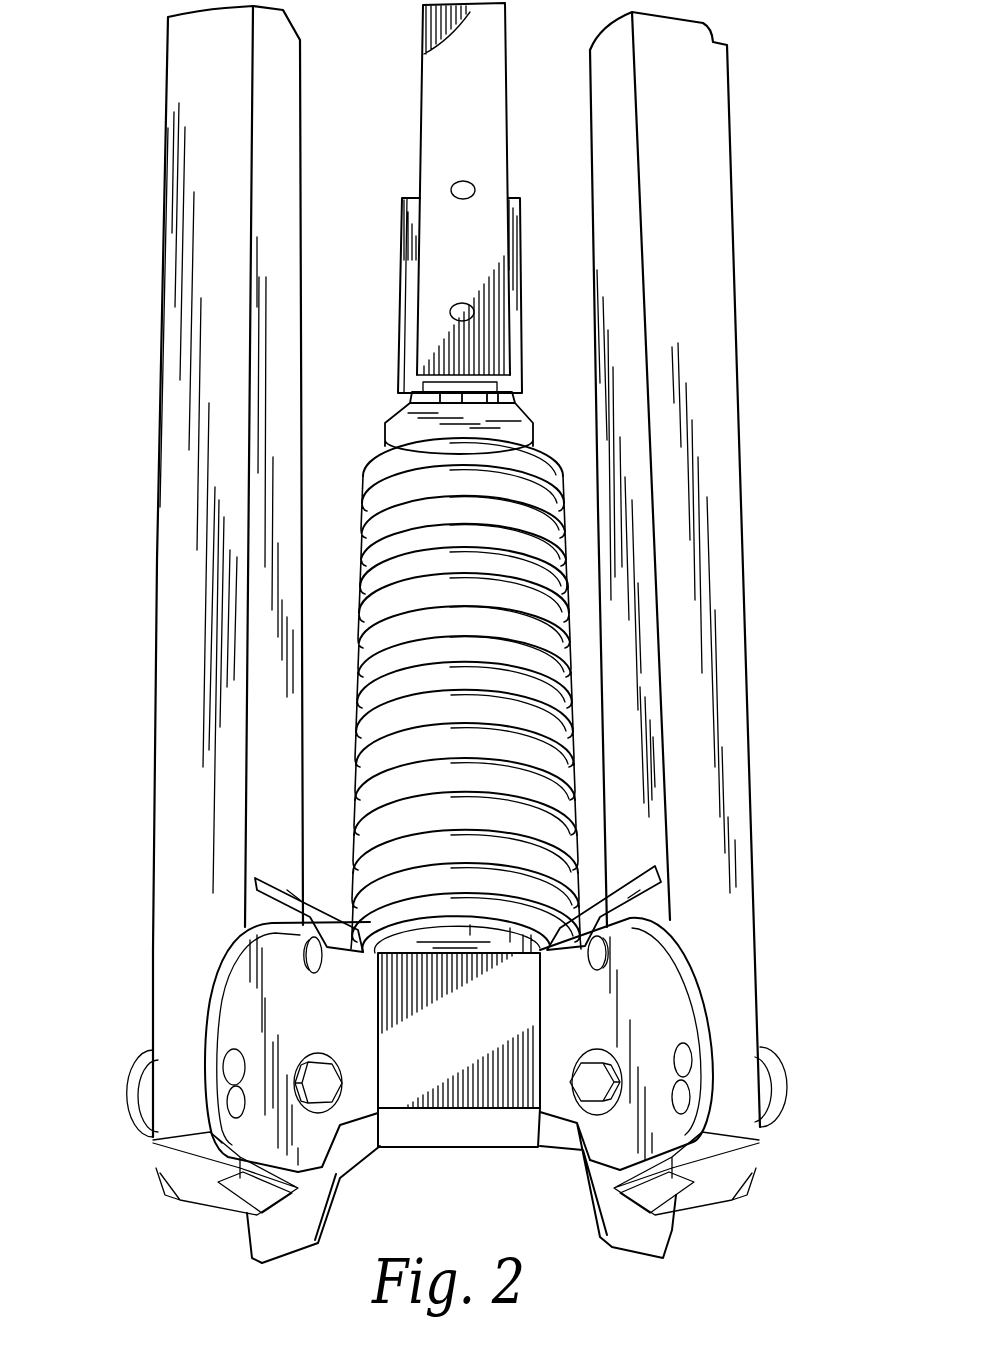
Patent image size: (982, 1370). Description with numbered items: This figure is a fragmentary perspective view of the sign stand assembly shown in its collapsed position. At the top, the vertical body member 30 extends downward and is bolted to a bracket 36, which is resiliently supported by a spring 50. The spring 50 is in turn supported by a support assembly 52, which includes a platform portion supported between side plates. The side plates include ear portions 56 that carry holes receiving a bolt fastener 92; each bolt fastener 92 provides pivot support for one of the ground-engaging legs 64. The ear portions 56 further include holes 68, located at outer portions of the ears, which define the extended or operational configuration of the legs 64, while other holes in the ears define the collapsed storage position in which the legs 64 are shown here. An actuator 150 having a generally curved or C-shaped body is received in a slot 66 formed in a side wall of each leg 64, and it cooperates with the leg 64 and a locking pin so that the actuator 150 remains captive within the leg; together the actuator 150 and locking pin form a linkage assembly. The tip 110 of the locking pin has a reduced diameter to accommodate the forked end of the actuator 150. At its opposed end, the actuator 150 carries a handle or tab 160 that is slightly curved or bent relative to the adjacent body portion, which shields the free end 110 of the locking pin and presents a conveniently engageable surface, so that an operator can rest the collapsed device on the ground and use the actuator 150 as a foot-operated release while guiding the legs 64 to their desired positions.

The vertical body member 30 is at (463, 77).
The bracket 36 is at (407, 262).
The spring 50 is at (377, 470).
The support assembly 52 is at (445, 1060).
The ear portions 56 is at (655, 1232).
The ground-engaging legs 64 is at (197, 65).
The slot 66 is at (268, 877).
The holes 68 is at (230, 1055).
The bolt fastener 92 is at (323, 1058).
The tip of locking pin 110 is at (328, 948).
The actuator 150 is at (287, 890).
The tab 160 is at (348, 920).